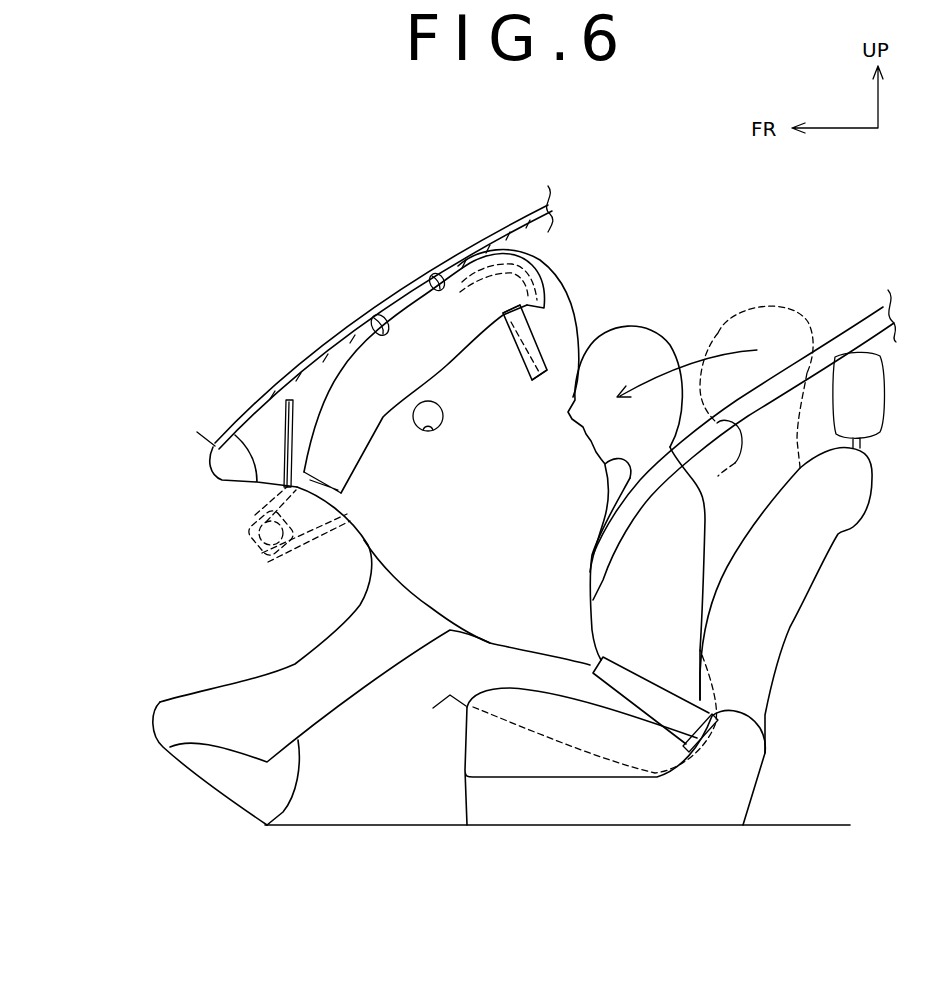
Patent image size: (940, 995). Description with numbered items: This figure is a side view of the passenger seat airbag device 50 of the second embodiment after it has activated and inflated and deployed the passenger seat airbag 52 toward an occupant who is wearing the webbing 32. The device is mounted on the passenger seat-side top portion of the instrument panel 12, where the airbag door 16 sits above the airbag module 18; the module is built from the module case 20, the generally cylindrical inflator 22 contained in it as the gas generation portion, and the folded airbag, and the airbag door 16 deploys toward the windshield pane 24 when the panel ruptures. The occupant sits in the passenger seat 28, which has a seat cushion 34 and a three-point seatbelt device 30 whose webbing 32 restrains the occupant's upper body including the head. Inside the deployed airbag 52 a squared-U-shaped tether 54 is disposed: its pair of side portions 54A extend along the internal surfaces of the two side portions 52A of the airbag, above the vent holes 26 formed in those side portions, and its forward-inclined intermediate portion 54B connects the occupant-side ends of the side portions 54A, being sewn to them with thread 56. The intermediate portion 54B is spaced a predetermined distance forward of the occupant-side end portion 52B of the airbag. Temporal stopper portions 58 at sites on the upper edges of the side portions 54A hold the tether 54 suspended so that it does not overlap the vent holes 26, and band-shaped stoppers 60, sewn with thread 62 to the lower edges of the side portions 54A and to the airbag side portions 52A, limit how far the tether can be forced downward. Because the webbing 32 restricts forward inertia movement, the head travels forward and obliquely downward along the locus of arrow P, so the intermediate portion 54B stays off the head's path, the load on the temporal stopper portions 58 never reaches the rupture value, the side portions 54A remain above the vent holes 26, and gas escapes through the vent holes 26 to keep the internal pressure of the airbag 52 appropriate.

The instrument panel 12 is at (235, 435).
The airbag door 16 is at (285, 418).
The airbag module 18 is at (247, 560).
The module case 20 is at (243, 527).
The inflator 22 is at (283, 562).
The windshield pane 24 is at (307, 356).
The vent hole 26 is at (425, 431).
The passenger seat 28 is at (788, 605).
The seatbelt device 30 is at (744, 485).
The webbing 32 is at (830, 340).
The seat cushion 34 is at (478, 757).
The passenger seat airbag device 50 is at (621, 266).
The passenger seat airbag 52 is at (580, 304).
The side portion 52A is at (437, 572).
The occupant-side end portion 52B is at (580, 338).
The tether 54 is at (402, 426).
The side portion 54A is at (445, 366).
The intermediate portion 54B is at (543, 307).
The thread 56 is at (494, 281).
The temporal stopper portion 58 is at (383, 312).
The stopper 60 is at (531, 355).
The thread 62 is at (507, 314).
The arrow P is at (700, 372).